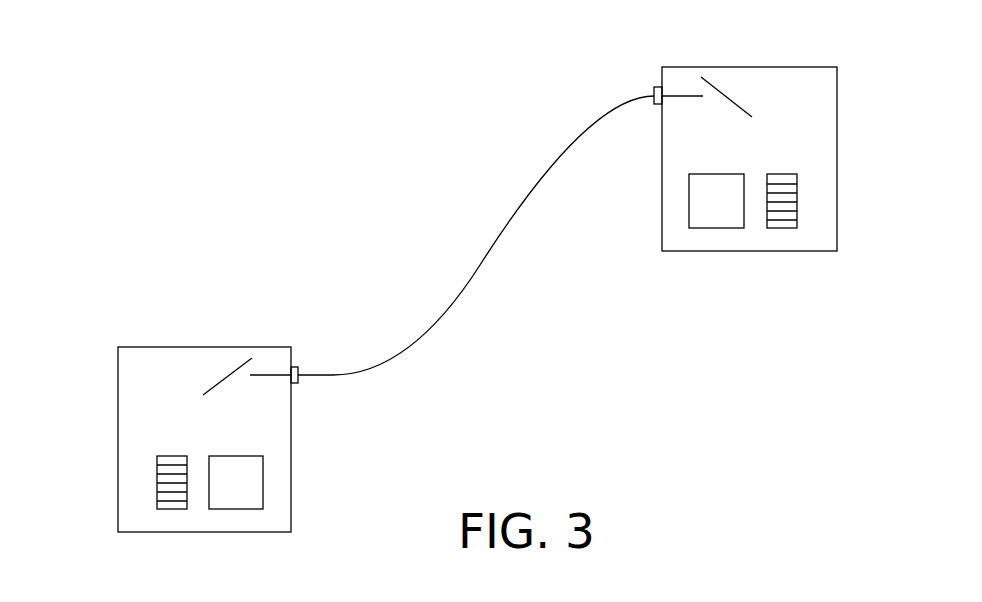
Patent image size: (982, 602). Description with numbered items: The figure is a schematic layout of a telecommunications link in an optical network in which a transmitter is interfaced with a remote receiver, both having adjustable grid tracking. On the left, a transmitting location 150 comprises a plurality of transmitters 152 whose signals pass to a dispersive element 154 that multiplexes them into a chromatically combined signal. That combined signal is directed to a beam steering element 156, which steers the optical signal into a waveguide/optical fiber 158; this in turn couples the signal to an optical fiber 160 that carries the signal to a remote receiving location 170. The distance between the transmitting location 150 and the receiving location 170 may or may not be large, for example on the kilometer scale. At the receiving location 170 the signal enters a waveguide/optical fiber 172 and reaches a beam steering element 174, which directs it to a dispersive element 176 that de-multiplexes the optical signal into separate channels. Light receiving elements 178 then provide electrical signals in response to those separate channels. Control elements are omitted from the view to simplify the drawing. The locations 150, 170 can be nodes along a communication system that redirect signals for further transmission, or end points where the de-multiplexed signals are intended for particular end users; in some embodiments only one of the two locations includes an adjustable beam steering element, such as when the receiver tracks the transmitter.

The transmitting location 150 is at (118, 442).
The transmitters 152 is at (175, 510).
The dispersive element 154 is at (248, 510).
The beam steering element 156 is at (225, 375).
The waveguide/optical fiber 158 is at (275, 378).
The optical fiber 160 is at (335, 373).
The remote receiving location 170 is at (837, 160).
The waveguide/optical fiber 172 is at (678, 100).
The beam steering element 174 is at (727, 97).
The dispersive element 176 is at (705, 230).
The light receiving elements 178 is at (777, 230).